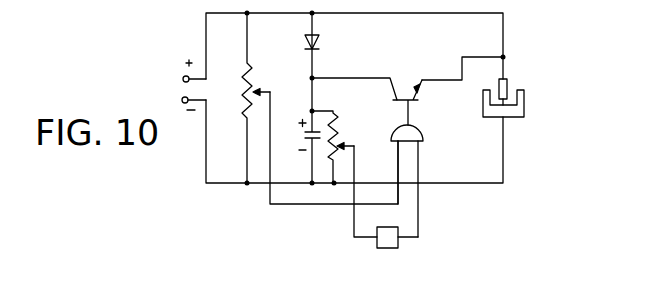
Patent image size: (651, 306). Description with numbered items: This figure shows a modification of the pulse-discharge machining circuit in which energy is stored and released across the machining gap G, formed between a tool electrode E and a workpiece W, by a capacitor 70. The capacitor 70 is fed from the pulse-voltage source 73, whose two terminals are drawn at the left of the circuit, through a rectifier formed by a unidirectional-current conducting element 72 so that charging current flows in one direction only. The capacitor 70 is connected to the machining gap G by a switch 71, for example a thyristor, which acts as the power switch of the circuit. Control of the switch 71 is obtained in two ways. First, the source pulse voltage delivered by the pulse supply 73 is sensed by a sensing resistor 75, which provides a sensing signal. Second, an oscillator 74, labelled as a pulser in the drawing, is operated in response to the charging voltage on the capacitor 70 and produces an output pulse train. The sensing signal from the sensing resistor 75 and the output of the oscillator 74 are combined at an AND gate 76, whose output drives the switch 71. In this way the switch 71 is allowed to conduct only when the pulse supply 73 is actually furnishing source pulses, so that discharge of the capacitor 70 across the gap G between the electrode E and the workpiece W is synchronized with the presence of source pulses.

The capacitor 70 is at (302, 135).
The switch 71 is at (405, 90).
The unidirectional-current conducting element 72 is at (318, 43).
The pulse-voltage source 73 is at (182, 80).
The oscillator 74 is at (387, 258).
The sensing resistor 75 is at (244, 90).
The AND gate 76 is at (420, 130).
The electrode E is at (509, 88).
The machining gap G is at (512, 103).
The workpiece W is at (513, 119).